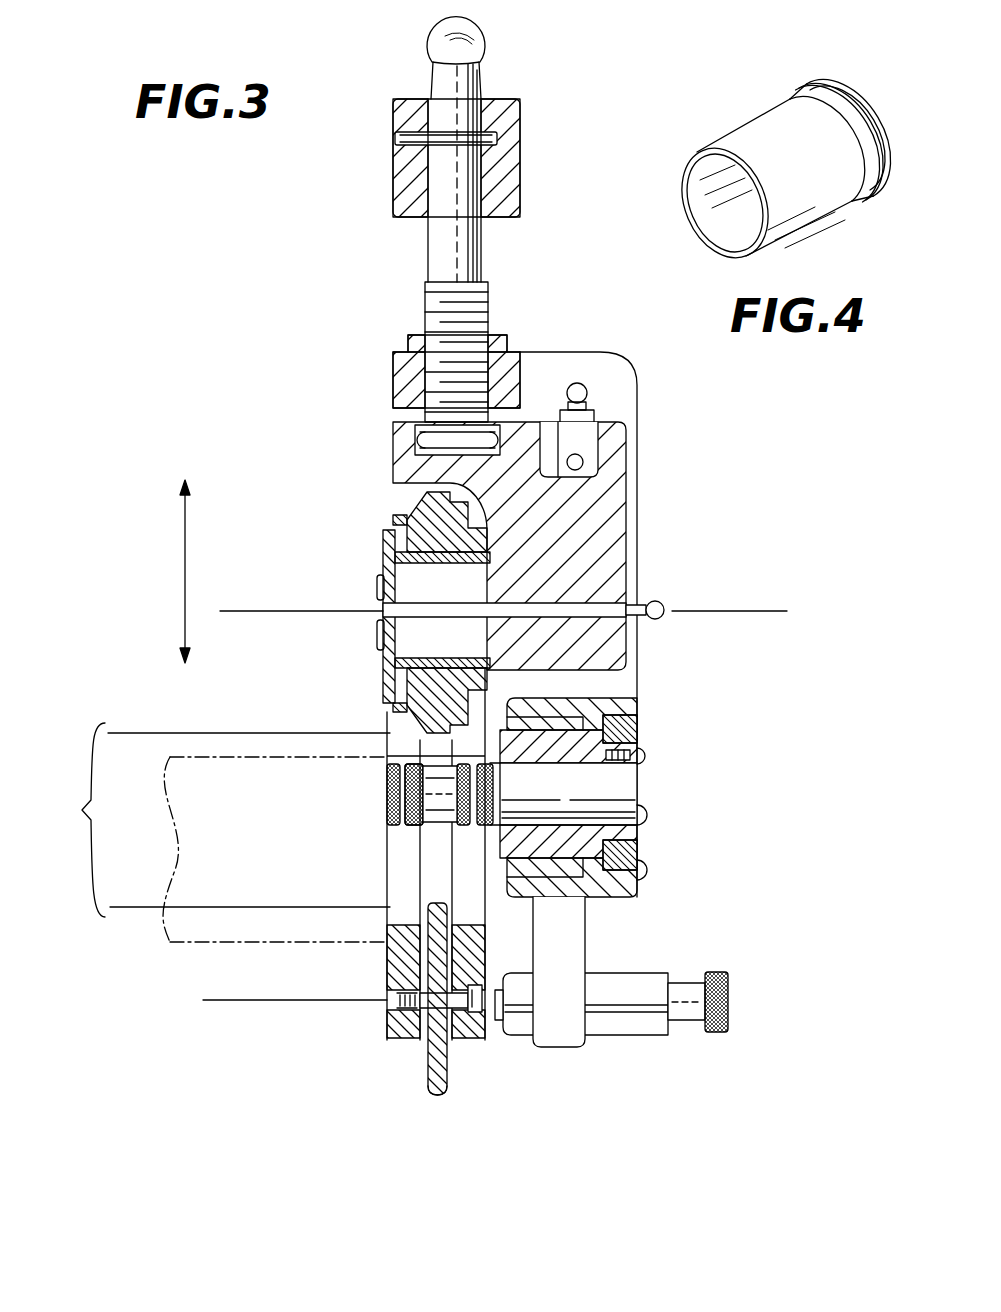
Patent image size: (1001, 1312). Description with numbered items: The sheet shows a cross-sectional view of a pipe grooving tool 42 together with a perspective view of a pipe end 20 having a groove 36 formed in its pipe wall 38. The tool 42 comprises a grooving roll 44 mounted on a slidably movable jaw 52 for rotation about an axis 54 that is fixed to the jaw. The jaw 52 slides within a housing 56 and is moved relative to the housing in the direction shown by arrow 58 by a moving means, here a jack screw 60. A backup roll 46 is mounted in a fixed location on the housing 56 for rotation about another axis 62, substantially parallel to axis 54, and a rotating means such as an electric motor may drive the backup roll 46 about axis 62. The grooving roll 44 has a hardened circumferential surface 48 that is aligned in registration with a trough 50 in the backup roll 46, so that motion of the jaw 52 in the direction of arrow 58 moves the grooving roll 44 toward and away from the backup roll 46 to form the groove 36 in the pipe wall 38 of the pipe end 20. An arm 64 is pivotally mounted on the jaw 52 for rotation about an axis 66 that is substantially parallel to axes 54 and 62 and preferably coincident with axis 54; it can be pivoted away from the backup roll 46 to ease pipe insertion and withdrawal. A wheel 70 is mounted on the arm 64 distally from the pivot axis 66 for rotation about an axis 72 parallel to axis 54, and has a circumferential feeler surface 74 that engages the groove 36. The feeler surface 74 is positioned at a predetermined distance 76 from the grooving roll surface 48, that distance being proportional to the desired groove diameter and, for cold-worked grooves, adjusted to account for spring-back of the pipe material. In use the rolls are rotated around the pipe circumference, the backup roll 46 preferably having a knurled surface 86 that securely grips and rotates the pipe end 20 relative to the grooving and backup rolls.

In FIG. 3, the pipe end 20 is at (372, 942).
In FIG. 4, the pipe end 20 is at (742, 133).
In FIG. 4, the groove 36 is at (808, 88).
In FIG. 4, the pipe wall 38 is at (680, 197).
In FIG. 3, the pipe grooving tool 42 is at (652, 557).
In FIG. 3, the grooving roll 44 is at (403, 502).
In FIG. 3, the backup roll 46 is at (385, 810).
In FIG. 3, the circumferential surface 48 is at (445, 745).
In FIG. 3, the trough 50 is at (398, 862).
In FIG. 3, the jaw 52 is at (588, 497).
In FIG. 3, the axis 54 is at (724, 613).
In FIG. 3, the housing 56 is at (608, 380).
In FIG. 3, the arrow 58 is at (185, 593).
In FIG. 3, the jack screw 60 is at (488, 305).
In FIG. 3, the axis 62 is at (662, 790).
In FIG. 3, the arm 64 is at (393, 887).
In FIG. 3, the axis 66 is at (258, 613).
In FIG. 3, the wheel 70 is at (440, 1070).
In FIG. 3, the axis 72 is at (247, 1002).
In FIG. 3, the feeler surface 74 is at (437, 1095).
In FIG. 3, the predetermined distance 76 is at (212, 820).
In FIG. 3, the knurled surface 86 is at (385, 820).